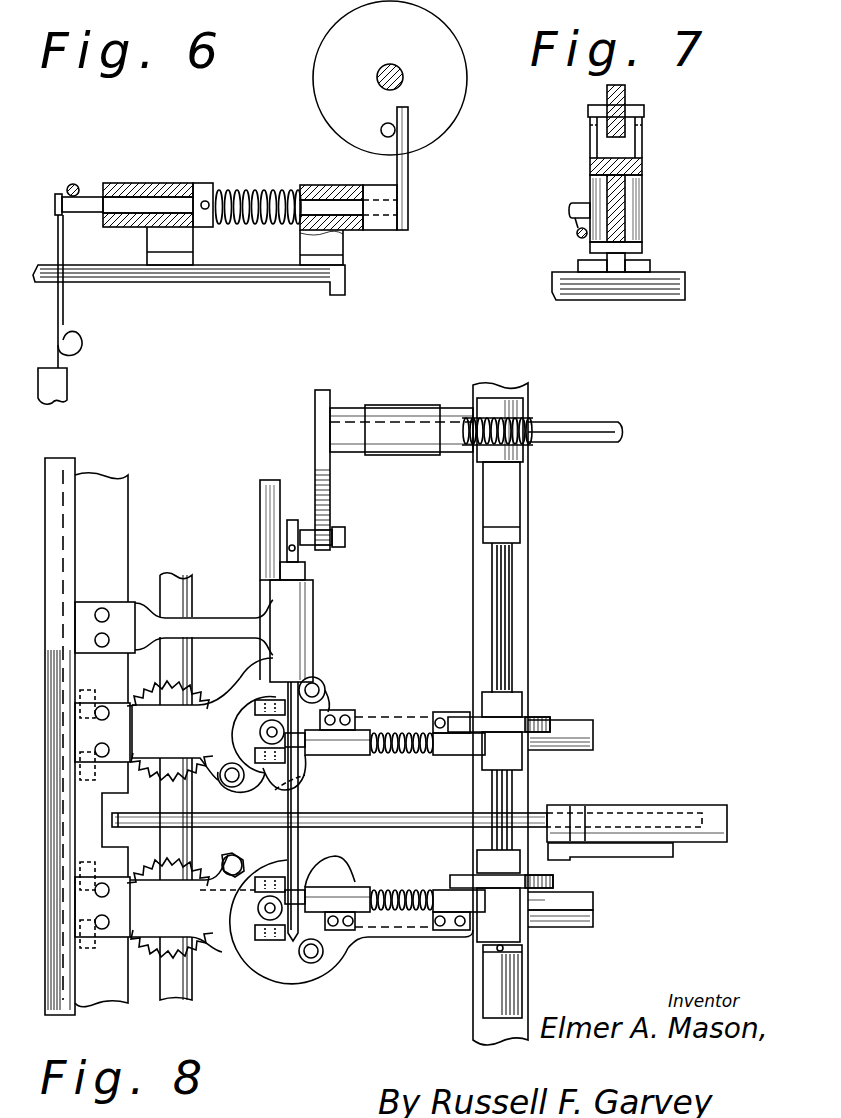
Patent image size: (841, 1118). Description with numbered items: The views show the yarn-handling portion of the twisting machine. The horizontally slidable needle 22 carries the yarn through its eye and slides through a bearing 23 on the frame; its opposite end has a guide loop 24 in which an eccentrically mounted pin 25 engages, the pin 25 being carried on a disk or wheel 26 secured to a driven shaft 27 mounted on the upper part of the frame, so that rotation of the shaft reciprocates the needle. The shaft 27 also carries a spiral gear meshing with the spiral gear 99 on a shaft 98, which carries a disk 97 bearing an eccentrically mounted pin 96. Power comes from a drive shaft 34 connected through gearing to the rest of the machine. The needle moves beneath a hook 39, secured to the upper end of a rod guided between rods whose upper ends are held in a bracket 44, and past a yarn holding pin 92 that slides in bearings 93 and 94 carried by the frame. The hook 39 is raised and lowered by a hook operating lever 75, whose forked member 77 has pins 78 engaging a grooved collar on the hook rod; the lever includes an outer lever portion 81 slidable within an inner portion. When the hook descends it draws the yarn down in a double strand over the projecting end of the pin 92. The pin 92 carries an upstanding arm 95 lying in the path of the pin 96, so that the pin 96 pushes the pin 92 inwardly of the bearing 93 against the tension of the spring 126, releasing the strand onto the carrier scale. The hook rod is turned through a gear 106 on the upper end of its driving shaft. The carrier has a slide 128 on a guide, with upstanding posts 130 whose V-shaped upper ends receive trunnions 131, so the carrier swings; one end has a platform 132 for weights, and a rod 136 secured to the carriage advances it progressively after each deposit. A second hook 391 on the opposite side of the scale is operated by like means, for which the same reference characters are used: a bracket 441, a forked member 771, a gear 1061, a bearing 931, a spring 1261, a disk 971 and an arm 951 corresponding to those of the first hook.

In FIG. 6, the yarn holding pin 92 is at (102, 197).
In FIG. 8, the yarn holding pin 92 is at (285, 735).
In FIG. 6, the bearing 93 is at (172, 186).
In FIG. 8, the bearing 93 is at (340, 893).
In FIG. 6, the spring 126 is at (240, 188).
In FIG. 8, the spring 126 is at (410, 893).
In FIG. 6, the bearing 94 is at (333, 186).
In FIG. 6, the upstanding arm 95 is at (409, 163).
In FIG. 8, the upstanding arm 95 is at (528, 912).
In FIG. 6, the eccentrically mounted pin 96 is at (381, 124).
In FIG. 6, the shaft 98 is at (398, 74).
In FIG. 7, the trunnions 131 is at (645, 108).
In FIG. 7, the posts 130 is at (637, 121).
In FIG. 7, the slide 128 is at (638, 182).
In FIG. 7, the platform 132 is at (572, 212).
In FIG. 7, the rod 136 is at (577, 236).
In FIG. 8, the rod 136 is at (655, 845).
In FIG. 8, the spiral gear 99 is at (535, 420).
In FIG. 8, the driven shaft 27 is at (585, 437).
In FIG. 8, the guide loop 24 is at (292, 518).
In FIG. 8, the disk or wheel 26 is at (333, 490).
In FIG. 8, the eccentrically mounted pin 25 is at (347, 537).
In FIG. 8, the drive shaft 34 is at (205, 580).
In FIG. 8, the bearing 23 is at (315, 625).
In FIG. 8, the bracket 441 is at (227, 680).
In FIG. 8, the forked member 771 is at (320, 705).
In FIG. 8, the gear 1061 is at (150, 694).
In FIG. 8, the second hook 391 is at (257, 728).
In FIG. 8, the bearing 931 is at (340, 758).
In FIG. 8, the spring 1261 is at (420, 755).
In FIG. 8, the disk 971 is at (540, 714).
In FIG. 8, the upstanding arm 951 is at (528, 752).
In FIG. 8, the gear 106 is at (150, 862).
In FIG. 8, the needle 22 is at (335, 866).
In FIG. 8, the disk 97 is at (553, 880).
In FIG. 8, the outer lever portion 81 is at (590, 907).
In FIG. 8, the hook operating lever 75 is at (580, 929).
In FIG. 8, the pins 78 is at (179, 903).
In FIG. 8, the hook 39 is at (262, 912).
In FIG. 8, the forked member 77 is at (283, 935).
In FIG. 8, the bracket 44 is at (300, 975).